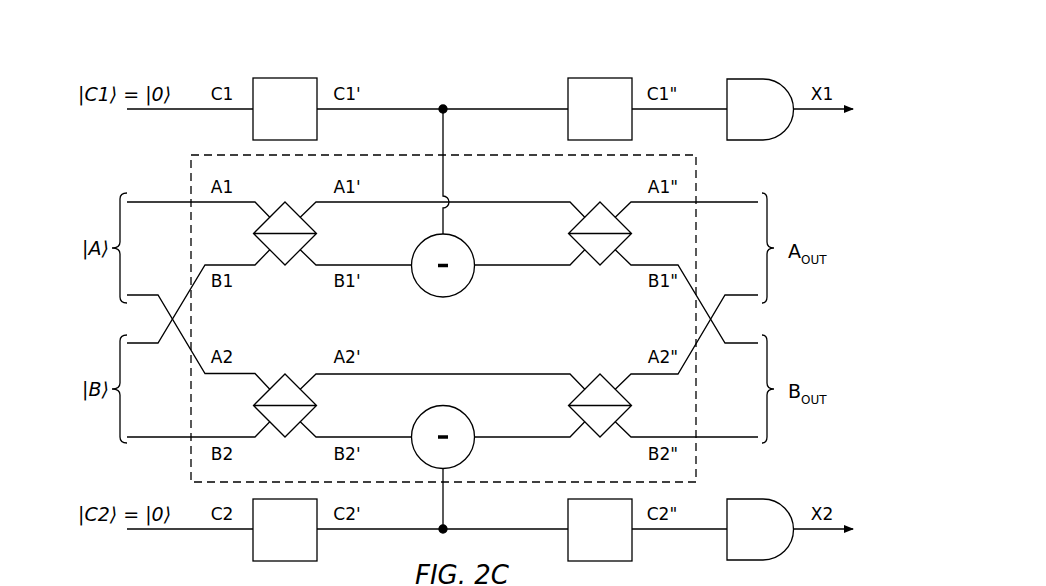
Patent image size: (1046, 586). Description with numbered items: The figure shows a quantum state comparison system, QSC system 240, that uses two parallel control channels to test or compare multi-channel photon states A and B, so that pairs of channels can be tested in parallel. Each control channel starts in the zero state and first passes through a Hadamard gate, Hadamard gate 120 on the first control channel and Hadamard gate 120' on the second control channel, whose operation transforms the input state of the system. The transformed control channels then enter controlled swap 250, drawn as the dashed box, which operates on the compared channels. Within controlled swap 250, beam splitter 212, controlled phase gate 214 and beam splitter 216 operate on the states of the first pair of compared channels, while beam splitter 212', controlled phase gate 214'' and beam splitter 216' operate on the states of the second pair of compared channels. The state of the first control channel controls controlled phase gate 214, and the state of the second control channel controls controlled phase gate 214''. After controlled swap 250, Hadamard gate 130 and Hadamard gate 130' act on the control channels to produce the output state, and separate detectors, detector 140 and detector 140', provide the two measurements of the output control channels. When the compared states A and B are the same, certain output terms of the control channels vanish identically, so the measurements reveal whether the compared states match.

The Hadamard gate 120 is at (285, 109).
The Hadamard gate 120' is at (285, 530).
The Hadamard gate 130 is at (600, 109).
The Hadamard gate 130' is at (600, 530).
The detector 140 is at (760, 109).
The detector 140' is at (760, 529).
The beam splitter 212 is at (289, 218).
The beam splitter 212' is at (291, 389).
The controlled phase gate 214 is at (424, 203).
The controlled phase gate 214'' is at (413, 462).
The beam splitter 216 is at (596, 218).
The beam splitter 216' is at (595, 389).
The QSC system 240 is at (222, 62).
The controlled swap 250 is at (443, 318).